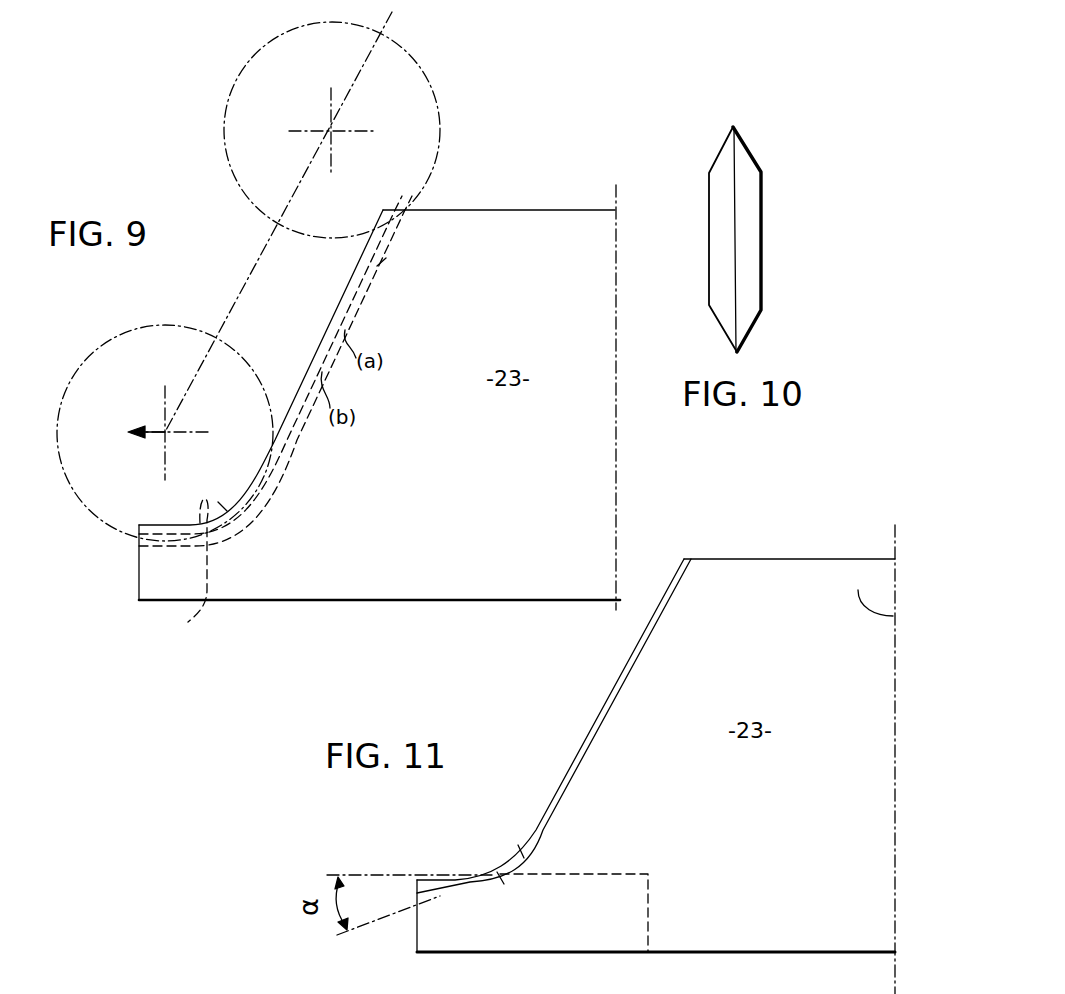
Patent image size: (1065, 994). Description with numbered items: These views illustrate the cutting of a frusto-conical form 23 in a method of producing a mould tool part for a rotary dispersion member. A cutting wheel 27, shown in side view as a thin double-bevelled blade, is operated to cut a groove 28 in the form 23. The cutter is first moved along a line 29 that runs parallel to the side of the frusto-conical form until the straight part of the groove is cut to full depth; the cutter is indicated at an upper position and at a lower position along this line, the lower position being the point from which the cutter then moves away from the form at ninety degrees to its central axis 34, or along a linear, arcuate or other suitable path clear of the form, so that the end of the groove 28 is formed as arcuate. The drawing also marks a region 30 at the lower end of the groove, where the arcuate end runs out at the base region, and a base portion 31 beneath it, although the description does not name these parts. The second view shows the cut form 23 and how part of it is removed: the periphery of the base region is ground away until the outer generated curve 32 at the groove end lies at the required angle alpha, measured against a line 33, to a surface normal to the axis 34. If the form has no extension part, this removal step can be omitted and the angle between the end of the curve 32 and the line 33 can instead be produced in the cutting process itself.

In FIG. 9, the frusto-conical form 23 is at (379, 397).
In FIG. 11, the frusto-conical form 23 is at (789, 759).
In FIG. 9, the cutting wheel 27 is at (430, 95).
In FIG. 10, the cutting wheel 27 is at (752, 262).
In FIG. 9, the groove 28 is at (393, 263).
In FIG. 11, the groove 28 is at (601, 714).
In FIG. 9, the line 29 is at (393, 16).
In FIG. 9, the flange / foot portion of strip 30 is at (182, 569).
In FIG. 11, the flange / foot portion of strip 30 is at (505, 878).
In FIG. 11, the base 31 is at (474, 953).
In FIG. 11, the outer generated curve 32 is at (515, 852).
In FIG. 11, the line 33 is at (616, 871).
In FIG. 11, the central axis 34 is at (858, 590).